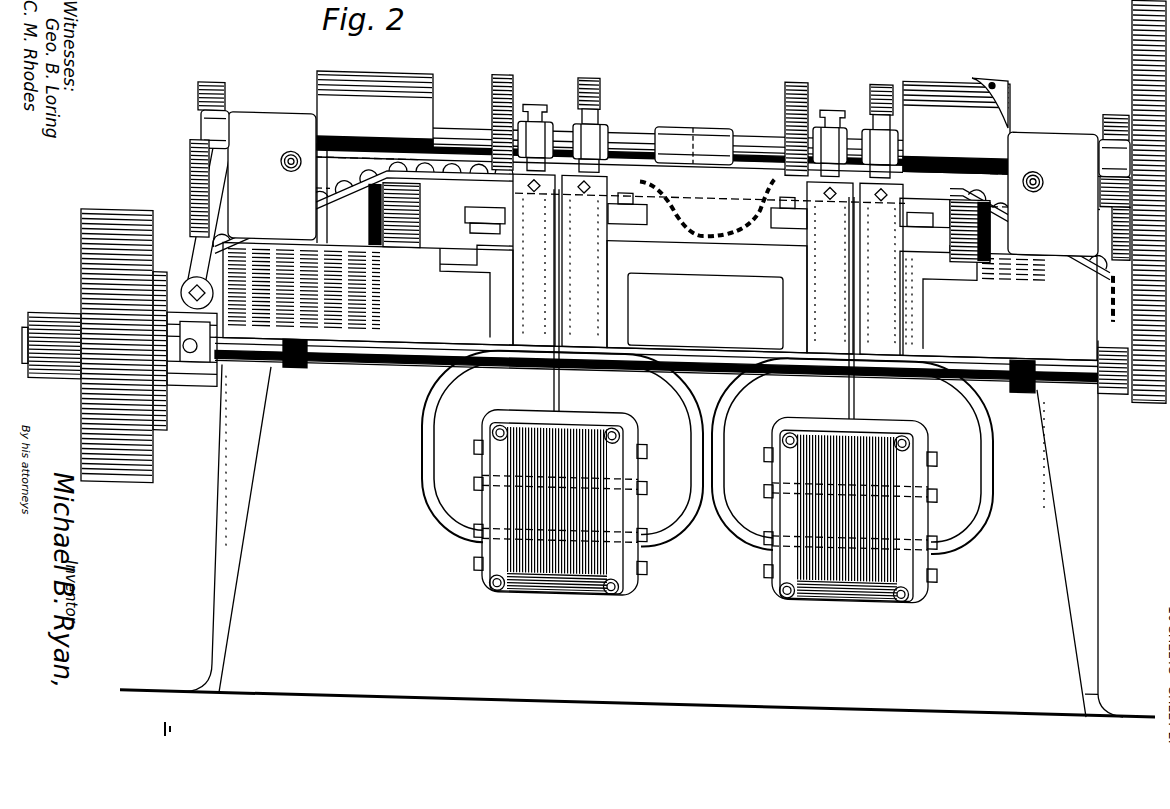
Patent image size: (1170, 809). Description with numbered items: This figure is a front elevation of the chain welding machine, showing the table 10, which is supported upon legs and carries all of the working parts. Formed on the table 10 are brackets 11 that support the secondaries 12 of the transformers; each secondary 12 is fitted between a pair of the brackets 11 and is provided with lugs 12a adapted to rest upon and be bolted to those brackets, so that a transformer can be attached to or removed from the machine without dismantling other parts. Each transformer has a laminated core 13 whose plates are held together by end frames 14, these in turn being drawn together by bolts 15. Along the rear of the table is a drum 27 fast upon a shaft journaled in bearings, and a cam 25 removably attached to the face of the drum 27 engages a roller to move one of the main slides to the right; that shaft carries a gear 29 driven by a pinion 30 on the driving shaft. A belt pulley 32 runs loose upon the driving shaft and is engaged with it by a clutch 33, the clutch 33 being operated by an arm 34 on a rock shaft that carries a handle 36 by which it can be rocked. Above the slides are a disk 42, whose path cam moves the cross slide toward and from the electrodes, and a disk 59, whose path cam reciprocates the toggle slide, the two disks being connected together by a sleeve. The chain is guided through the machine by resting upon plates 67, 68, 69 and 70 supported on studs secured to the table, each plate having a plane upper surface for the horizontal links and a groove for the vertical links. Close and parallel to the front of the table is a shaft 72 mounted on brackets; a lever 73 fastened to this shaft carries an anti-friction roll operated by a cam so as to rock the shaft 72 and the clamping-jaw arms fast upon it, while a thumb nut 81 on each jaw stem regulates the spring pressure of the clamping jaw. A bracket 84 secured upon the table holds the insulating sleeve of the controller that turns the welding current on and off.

The table 10 is at (1022, 384).
The brackets 11 is at (497, 322).
The secondaries 12 is at (527, 281).
The lugs 12a is at (975, 290).
The laminated cores 13 is at (574, 599).
The end frames 14 is at (482, 546).
The bolts 15 is at (629, 570).
The cam 25 is at (992, 70).
The drum 27 is at (396, 86).
The gear 29 is at (1134, 50).
The pinion 30 is at (1147, 389).
The belt pulley 32 is at (120, 224).
The clutch 33 is at (195, 396).
The arm 34 is at (200, 290).
The handle 36 is at (210, 177).
The disk 42 is at (506, 81).
The disk 59 is at (590, 84).
The plate 67 is at (1082, 254).
The plate 68 is at (786, 210).
The plate 69 is at (612, 207).
The plate 70 is at (452, 200).
The shaft 72 is at (452, 133).
The lever 73 is at (226, 111).
The thumb nut 81 is at (576, 108).
The bracket 84 is at (276, 123).